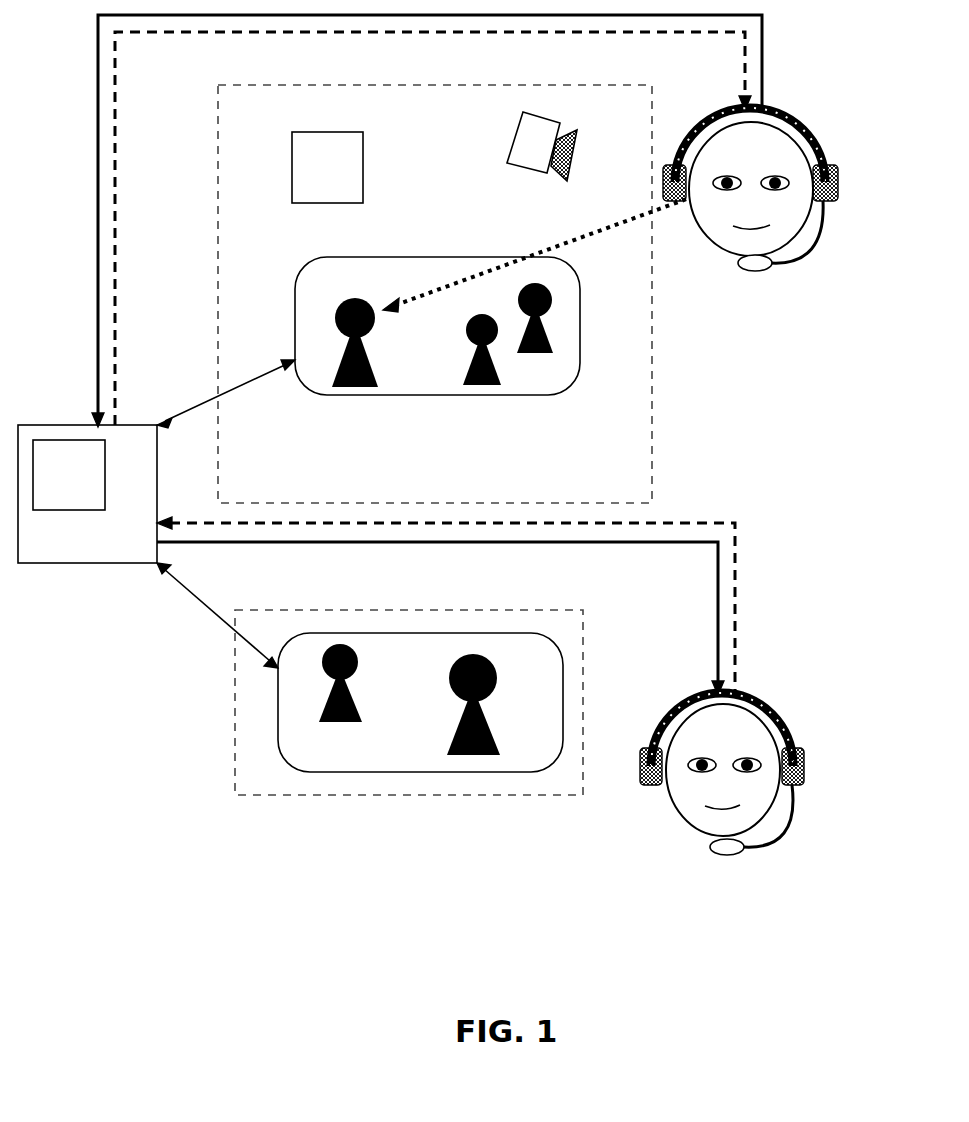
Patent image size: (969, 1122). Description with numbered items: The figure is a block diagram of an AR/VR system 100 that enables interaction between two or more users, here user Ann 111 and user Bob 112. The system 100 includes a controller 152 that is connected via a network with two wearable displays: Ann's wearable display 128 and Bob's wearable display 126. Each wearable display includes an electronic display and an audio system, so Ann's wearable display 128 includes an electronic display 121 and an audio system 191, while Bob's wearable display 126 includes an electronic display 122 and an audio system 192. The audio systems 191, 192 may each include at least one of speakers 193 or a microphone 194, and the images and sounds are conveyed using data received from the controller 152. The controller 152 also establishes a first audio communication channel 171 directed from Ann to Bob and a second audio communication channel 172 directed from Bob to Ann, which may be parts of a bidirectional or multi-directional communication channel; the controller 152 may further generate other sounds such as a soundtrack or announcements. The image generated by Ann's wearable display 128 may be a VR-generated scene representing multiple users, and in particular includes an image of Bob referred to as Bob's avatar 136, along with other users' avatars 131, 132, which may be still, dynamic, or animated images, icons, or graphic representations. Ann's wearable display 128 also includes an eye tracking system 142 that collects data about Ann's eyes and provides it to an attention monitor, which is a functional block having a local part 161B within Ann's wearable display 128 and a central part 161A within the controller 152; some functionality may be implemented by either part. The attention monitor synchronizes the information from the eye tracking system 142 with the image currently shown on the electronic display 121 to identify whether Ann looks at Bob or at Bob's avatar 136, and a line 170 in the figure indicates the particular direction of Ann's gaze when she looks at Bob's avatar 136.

The AR/VR system 100 is at (200, 219).
The user Ann 111 is at (764, 193).
The user Bob 112 is at (725, 764).
The electronic display 121 is at (468, 395).
The electronic display 122 is at (358, 772).
The wearable display 126 is at (583, 633).
The wearable display 128 is at (652, 472).
The avatar 131 is at (475, 755).
The avatar 132 is at (548, 348).
The Bob's avatar 136 is at (366, 385).
The eye tracking system 142 is at (508, 148).
The controller 152 is at (60, 563).
The central part of attention monitor 161A is at (93, 486).
The local part of attention monitor 161B is at (351, 179).
The line 170 is at (587, 238).
The first audio communication channel 171 is at (98, 264).
The second audio communication channel 172 is at (115, 258).
The audio system 191 is at (818, 136).
The audio system 192 is at (778, 711).
The speakers 193 is at (804, 764).
The microphone 194 is at (757, 271).